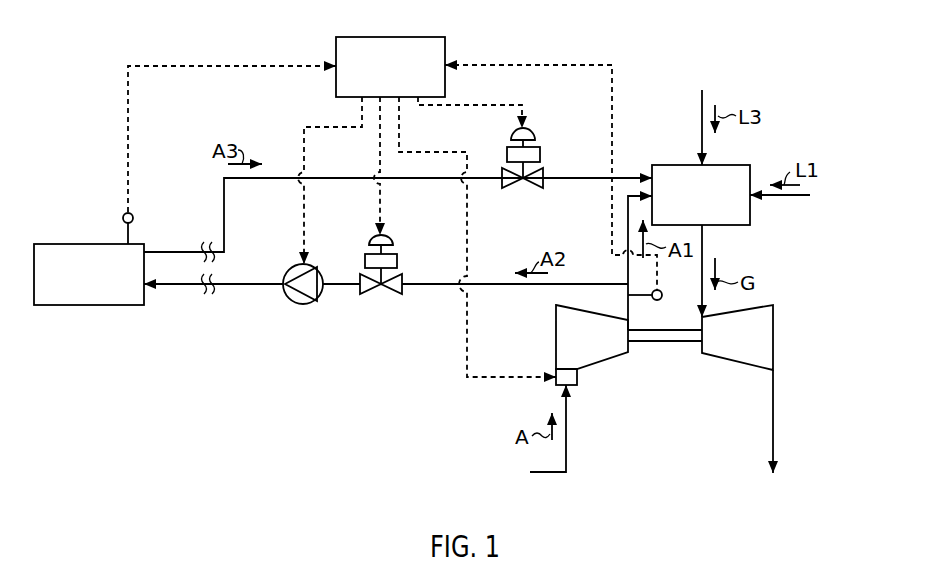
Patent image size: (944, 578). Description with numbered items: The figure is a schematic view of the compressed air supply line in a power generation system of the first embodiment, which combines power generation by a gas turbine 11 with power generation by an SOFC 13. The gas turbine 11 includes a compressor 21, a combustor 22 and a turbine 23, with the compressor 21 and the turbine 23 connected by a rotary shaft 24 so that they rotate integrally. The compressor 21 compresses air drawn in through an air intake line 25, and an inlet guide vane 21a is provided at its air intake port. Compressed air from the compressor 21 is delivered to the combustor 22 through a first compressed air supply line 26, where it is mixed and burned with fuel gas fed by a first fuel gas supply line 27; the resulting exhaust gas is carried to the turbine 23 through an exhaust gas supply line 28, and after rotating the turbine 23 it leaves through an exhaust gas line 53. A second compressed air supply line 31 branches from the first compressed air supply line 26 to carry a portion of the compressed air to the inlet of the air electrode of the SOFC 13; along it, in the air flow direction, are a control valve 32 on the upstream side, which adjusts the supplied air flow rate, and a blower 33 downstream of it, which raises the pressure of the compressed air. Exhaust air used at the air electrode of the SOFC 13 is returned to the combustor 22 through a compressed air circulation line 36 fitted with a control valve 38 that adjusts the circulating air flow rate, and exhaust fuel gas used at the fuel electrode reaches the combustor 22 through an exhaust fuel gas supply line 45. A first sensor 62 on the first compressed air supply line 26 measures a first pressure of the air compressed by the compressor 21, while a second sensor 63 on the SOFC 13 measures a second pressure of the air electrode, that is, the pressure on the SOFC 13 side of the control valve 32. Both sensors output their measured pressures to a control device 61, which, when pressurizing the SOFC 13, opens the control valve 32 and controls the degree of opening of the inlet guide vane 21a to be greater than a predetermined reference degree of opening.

The gas turbine 11 is at (691, 350).
The SOFC 13 is at (50, 232).
The compressor 21 is at (611, 358).
The inlet guide vane 21a is at (578, 376).
The combustor 22 is at (729, 152).
The turbine 23 is at (774, 337).
The rotary shaft 24 is at (648, 342).
The air intake line 25 is at (567, 447).
The first compressed air supply line 26 is at (623, 233).
The first fuel gas supply line 27 is at (777, 196).
The exhaust gas supply line 28 is at (703, 250).
The second compressed air supply line 31 is at (490, 284).
The control valve 32 is at (378, 232).
The blower 33 is at (292, 268).
The compressed air circulation line 36 is at (430, 178).
The control valve 38 is at (535, 136).
The exhaust fuel gas supply line 45 is at (700, 108).
The exhaust gas line 53 is at (774, 438).
The control device 61 is at (407, 37).
The first sensor 62 is at (661, 291).
The second sensor 63 is at (133, 214).